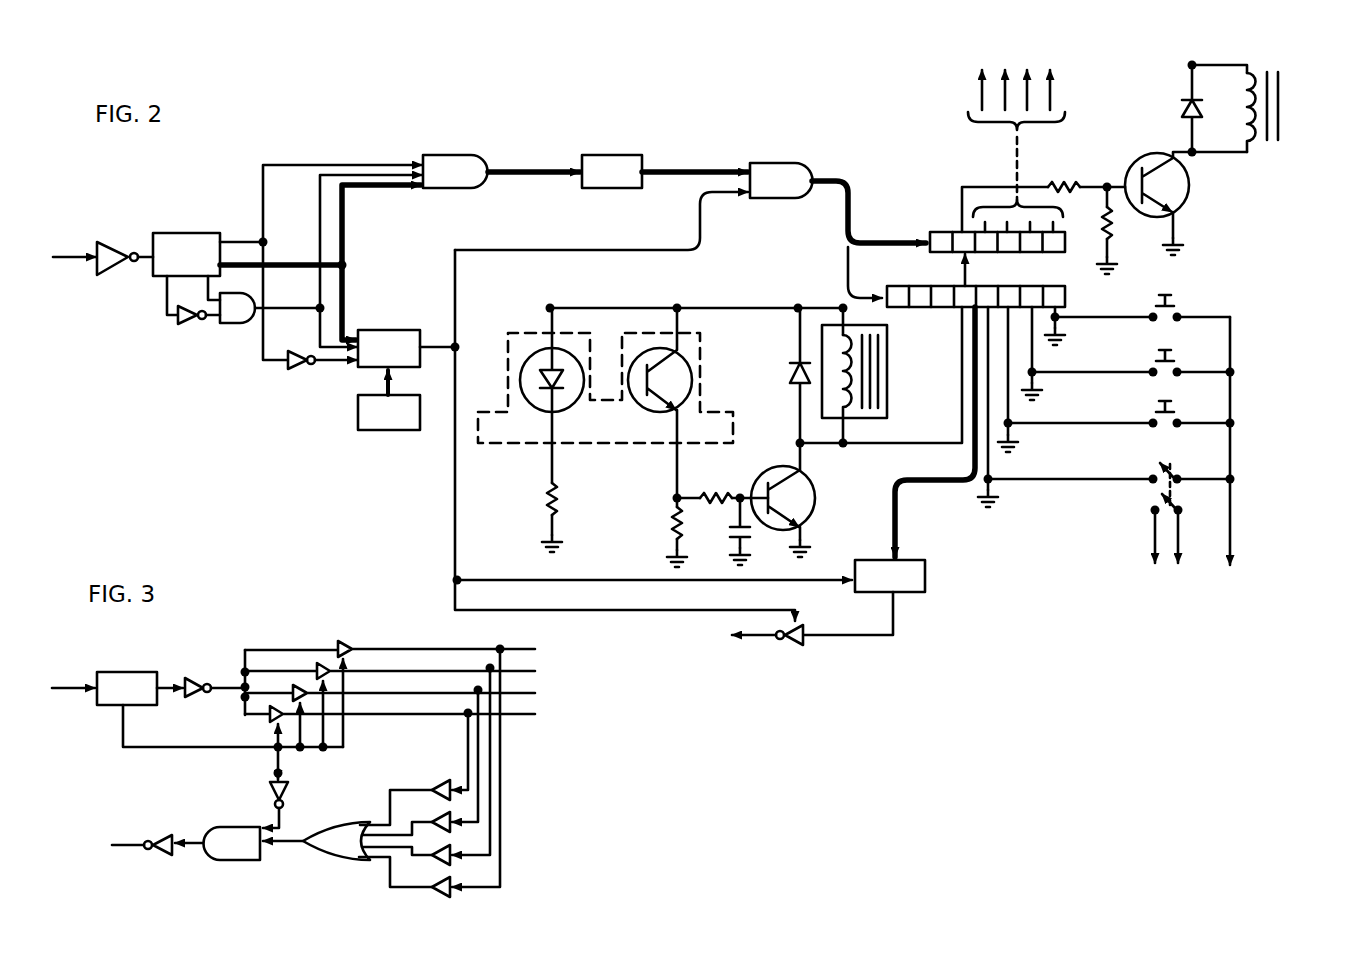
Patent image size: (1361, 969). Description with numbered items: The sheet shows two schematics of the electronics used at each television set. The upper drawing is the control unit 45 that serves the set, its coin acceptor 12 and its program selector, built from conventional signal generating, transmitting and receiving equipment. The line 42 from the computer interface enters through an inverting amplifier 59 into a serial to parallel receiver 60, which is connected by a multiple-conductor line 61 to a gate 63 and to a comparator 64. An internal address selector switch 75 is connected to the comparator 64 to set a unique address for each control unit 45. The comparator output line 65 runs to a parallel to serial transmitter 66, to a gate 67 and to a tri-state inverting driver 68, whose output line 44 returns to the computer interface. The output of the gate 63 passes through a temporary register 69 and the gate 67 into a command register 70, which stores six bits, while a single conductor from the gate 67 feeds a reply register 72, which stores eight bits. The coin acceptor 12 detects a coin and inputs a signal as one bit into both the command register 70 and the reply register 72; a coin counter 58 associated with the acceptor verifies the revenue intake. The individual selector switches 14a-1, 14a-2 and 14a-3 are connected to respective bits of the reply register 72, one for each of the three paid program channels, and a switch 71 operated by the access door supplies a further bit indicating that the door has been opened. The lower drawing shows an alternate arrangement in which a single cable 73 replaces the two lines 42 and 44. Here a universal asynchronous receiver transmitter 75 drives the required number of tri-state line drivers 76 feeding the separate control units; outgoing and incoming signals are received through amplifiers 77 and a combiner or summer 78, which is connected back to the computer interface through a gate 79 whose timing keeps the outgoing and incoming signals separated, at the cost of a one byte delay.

In FIG. 2, the coin acceptor 12 is at (612, 300).
In FIG. 2, the selector switch 14a-1 is at (1178, 300).
In FIG. 2, the selector switch 14a-2 is at (1178, 355).
In FIG. 2, the selector switch 14a-3 is at (1178, 408).
In FIG. 2, the line 42 is at (63, 257).
In FIG. 2, the output line 44 is at (760, 637).
In FIG. 2, the control unit 45 is at (682, 122).
In FIG. 2, the coin counter 58 is at (838, 295).
In FIG. 2, the inverting amplifier 59 is at (116, 243).
In FIG. 2, the serial to parallel receiver 60 is at (175, 233).
In FIG. 2, the multiple-conductor line 61 is at (345, 218).
In FIG. 2, the gate 63 is at (446, 155).
In FIG. 2, the comparator 64 is at (378, 330).
In FIG. 2, the comparator output line 65 is at (438, 345).
In FIG. 2, the parallel to serial transmitter 66 is at (927, 580).
In FIG. 2, the gate 67 is at (770, 163).
In FIG. 2, the tri-state inverting driver 68 is at (805, 642).
In FIG. 2, the temporary register 69 is at (598, 155).
In FIG. 2, the command register 70 is at (945, 232).
In FIG. 2, the switch 71 is at (1178, 465).
In FIG. 2, the reply register 72 is at (1068, 300).
In FIG. 3, the single cable 73 is at (72, 690).
In FIG. 2, the selector switch / UART 75 is at (358, 415).
In FIG. 3, the selector switch / UART 75 is at (137, 672).
In FIG. 3, the line drivers 76 is at (338, 643).
In FIG. 3, the amplifiers 77 is at (437, 785).
In FIG. 3, the combiner or summer 78 is at (343, 862).
In FIG. 3, the gate 79 is at (247, 862).